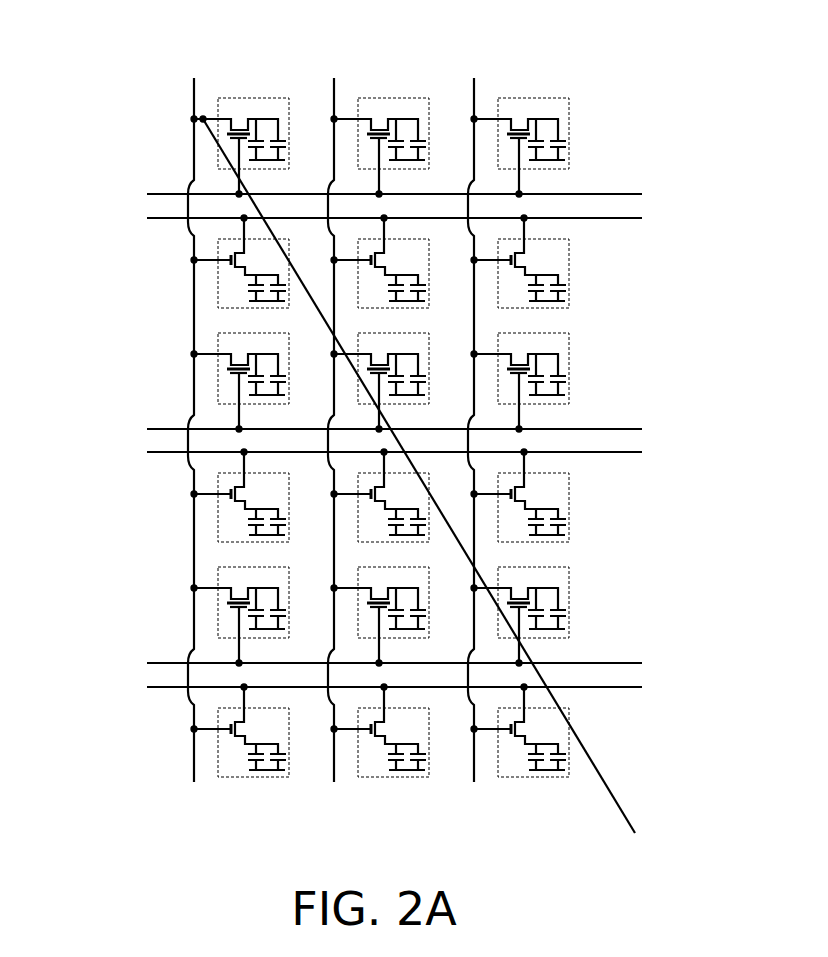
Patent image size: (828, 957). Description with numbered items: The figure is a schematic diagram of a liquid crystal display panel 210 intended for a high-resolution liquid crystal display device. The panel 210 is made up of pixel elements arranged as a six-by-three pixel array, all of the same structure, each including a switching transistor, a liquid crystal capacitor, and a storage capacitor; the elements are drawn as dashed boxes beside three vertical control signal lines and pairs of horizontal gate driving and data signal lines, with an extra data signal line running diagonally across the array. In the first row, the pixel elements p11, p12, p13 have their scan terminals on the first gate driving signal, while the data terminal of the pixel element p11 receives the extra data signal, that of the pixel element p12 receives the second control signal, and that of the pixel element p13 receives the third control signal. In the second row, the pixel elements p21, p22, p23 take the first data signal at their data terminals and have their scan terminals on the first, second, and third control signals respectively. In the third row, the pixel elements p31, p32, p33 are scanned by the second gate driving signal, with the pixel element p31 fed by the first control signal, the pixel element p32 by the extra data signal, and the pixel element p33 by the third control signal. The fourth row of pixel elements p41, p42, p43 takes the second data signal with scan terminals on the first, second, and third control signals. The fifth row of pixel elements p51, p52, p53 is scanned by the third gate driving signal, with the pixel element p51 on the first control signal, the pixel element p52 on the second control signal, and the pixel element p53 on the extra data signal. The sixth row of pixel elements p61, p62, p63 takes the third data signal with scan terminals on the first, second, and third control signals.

The liquid crystal display panel 210 is at (559, 38).
The pixel element p11 is at (289, 158).
The pixel element p12 is at (429, 158).
The pixel element p13 is at (569, 158).
The pixel element p21 is at (284, 243).
The pixel element p22 is at (430, 294).
The pixel element p23 is at (570, 294).
The pixel element p31 is at (289, 393).
The pixel element p32 is at (429, 393).
The pixel element p33 is at (569, 393).
The pixel element p41 is at (290, 528).
The pixel element p42 is at (430, 528).
The pixel element p43 is at (570, 528).
The pixel element p51 is at (289, 627).
The pixel element p52 is at (429, 627).
The pixel element p53 is at (569, 627).
The pixel element p61 is at (290, 763).
The pixel element p62 is at (430, 763).
The pixel element p63 is at (570, 763).